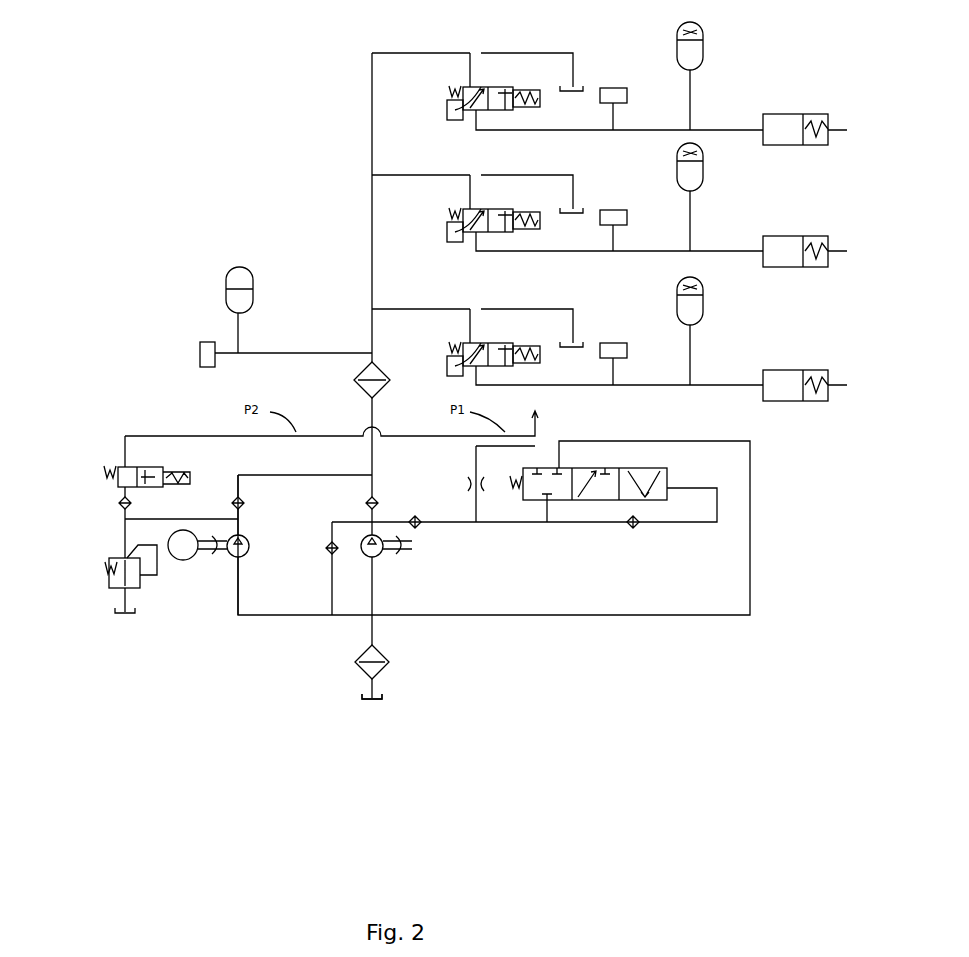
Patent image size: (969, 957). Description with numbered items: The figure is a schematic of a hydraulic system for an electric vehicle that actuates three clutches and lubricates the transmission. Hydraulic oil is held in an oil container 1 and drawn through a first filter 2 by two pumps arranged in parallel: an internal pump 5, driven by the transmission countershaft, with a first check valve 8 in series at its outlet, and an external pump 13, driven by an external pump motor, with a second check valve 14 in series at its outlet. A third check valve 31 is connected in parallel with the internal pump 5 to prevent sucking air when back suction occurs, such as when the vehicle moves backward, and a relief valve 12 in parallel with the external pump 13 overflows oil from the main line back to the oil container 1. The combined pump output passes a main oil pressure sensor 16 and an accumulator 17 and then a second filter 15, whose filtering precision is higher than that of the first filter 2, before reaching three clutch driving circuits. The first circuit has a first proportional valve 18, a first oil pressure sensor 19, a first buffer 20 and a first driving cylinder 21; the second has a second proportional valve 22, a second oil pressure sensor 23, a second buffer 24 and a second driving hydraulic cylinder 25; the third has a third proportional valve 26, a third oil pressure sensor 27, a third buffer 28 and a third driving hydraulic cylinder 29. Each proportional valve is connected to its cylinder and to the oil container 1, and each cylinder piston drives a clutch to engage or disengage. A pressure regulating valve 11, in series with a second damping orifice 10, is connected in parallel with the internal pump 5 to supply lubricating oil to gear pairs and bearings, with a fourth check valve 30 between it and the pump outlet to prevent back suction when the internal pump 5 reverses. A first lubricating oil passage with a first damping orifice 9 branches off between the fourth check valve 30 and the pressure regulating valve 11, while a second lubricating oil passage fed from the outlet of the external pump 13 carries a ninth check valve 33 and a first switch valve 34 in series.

The oil container 1 is at (383, 698).
The first filter 2 is at (380, 659).
The internal pump 5 is at (386, 551).
The first check valve 8 is at (380, 503).
The first damping orifice 9 is at (466, 484).
The second damping orifice 10 is at (640, 526).
The pressure regulating valve 11 is at (640, 501).
The relief valve 12 is at (110, 590).
The external pump 13 is at (231, 556).
The second check valve 14 is at (246, 501).
The second filter 15 is at (356, 380).
The main oil pressure sensor 16 is at (199, 364).
The accumulator 17 is at (224, 298).
The first proportional valve 18 is at (456, 368).
The first oil pressure sensor 19 is at (614, 346).
The first buffer 20 is at (697, 312).
The first driving cylinder 21 is at (779, 402).
The second proportional valve 22 is at (456, 234).
The second oil pressure sensor 23 is at (614, 213).
The second buffer 24 is at (697, 178).
The second driving hydraulic cylinder 25 is at (779, 268).
The third proportional valve 26 is at (456, 112).
The third oil pressure sensor 27 is at (614, 92).
The third buffer 28 is at (697, 56).
The third driving hydraulic cylinder 29 is at (779, 146).
The fourth check valve 30 is at (421, 525).
The third check valve 31 is at (328, 554).
The ninth check valve 33 is at (121, 508).
The first switch valve 34 is at (112, 486).